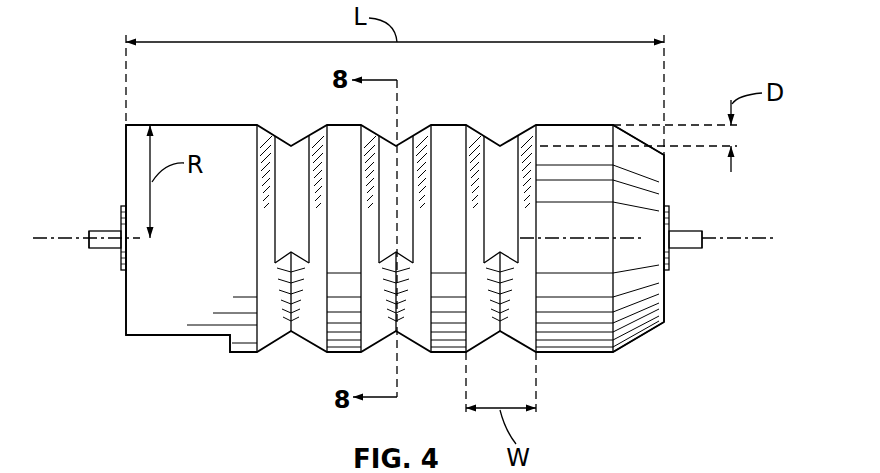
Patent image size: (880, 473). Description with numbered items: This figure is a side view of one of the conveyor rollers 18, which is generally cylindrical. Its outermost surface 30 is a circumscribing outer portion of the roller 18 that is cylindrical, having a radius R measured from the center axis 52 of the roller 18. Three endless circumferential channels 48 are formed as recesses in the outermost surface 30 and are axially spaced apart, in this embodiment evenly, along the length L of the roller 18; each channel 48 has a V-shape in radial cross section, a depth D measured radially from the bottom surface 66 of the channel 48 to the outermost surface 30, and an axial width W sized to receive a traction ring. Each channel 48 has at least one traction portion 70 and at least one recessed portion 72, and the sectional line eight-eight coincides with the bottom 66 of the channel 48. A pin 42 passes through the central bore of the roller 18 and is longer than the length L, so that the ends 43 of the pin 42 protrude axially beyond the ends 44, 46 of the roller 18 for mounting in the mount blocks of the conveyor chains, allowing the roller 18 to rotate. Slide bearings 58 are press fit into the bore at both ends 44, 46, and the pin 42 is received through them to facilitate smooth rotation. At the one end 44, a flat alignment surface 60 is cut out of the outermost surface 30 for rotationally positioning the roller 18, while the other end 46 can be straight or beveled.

The roller 18 is at (676, 52).
The outermost surface 30 is at (198, 132).
The pin 42 is at (96, 231).
The ends of the pin 43 is at (85, 246).
The end of the roller 44 is at (137, 336).
The other end of the roller 46 is at (645, 323).
The channel 48 is at (290, 145).
The center axis 52 is at (757, 240).
The slide bearings 58 is at (121, 210).
The flat alignment surface 60 is at (183, 336).
The bottom surface of the channel 66 is at (292, 144).
The traction portion 70 is at (284, 328).
The recessed portion 72 is at (289, 144).